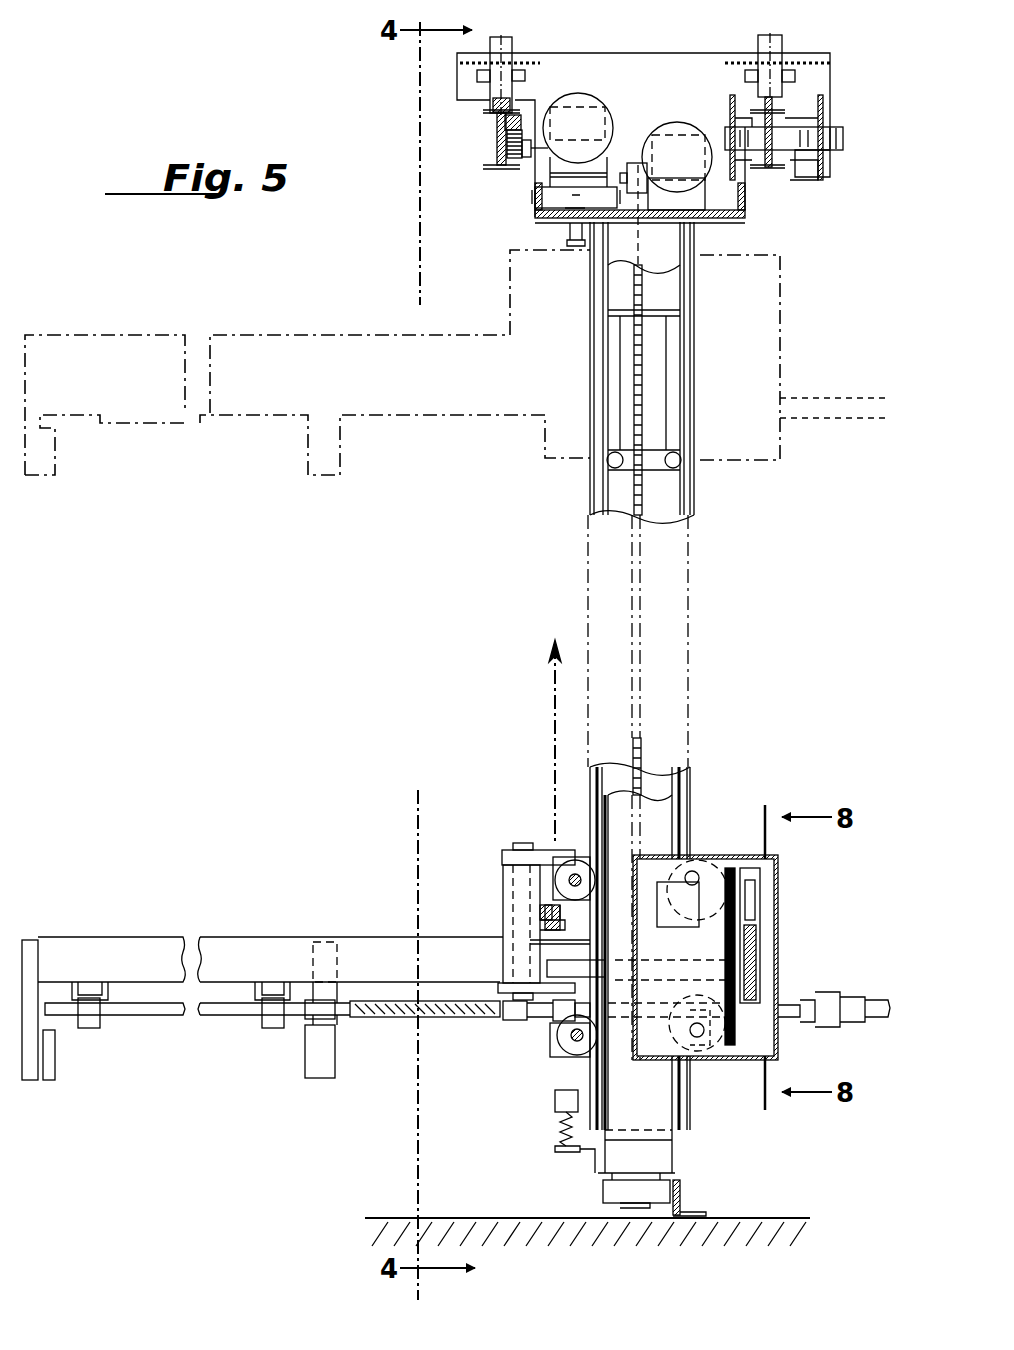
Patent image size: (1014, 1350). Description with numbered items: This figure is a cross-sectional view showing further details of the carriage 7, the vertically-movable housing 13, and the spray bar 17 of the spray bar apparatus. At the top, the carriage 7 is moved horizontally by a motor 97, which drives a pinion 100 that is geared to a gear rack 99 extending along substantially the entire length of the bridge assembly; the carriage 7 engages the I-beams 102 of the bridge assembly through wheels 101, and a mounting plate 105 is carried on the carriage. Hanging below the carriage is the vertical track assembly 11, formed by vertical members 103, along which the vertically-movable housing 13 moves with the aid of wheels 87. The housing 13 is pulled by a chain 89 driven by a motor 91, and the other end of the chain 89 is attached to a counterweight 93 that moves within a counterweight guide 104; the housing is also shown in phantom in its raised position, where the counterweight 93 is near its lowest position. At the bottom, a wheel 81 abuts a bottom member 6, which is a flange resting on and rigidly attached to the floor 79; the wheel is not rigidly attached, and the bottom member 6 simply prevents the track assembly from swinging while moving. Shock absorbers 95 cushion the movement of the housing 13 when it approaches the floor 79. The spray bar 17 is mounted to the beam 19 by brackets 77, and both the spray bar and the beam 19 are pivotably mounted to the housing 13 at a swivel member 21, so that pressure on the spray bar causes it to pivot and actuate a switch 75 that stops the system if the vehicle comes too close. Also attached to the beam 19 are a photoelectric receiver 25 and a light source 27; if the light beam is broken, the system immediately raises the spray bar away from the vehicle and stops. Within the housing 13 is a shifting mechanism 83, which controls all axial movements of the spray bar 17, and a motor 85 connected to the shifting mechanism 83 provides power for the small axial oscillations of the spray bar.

The bottom member 6 is at (672, 1196).
The carriage 7 is at (813, 84).
The vertical track assembly 11 is at (668, 1140).
The vertically-movable housing 13 is at (778, 903).
The spray bar 17 is at (453, 1018).
The beam 19 is at (388, 955).
The swivel member 21 is at (503, 912).
The photoelectric receiver 25 is at (322, 1078).
The light source 27 is at (48, 1063).
The switch 75 is at (553, 912).
The brackets 77 is at (95, 1028).
The floor 79 is at (464, 1218).
The wheel 81 is at (622, 1188).
The shifting mechanism 83 is at (760, 966).
The motor 85 is at (693, 870).
The wheels 87 is at (582, 862).
The chain 89 is at (642, 421).
The motor 91 is at (683, 123).
The counterweight 93 is at (622, 412).
The shock absorbers 95 is at (563, 1106).
The motor 97 is at (578, 100).
The gear rack 99 is at (512, 116).
The pinion 100 is at (522, 168).
The wheels 101 is at (504, 47).
The I-beams 102 is at (497, 142).
The vertical members 103 is at (655, 1158).
The counterweight guide 104 is at (692, 497).
The mounting plate 105 is at (722, 222).